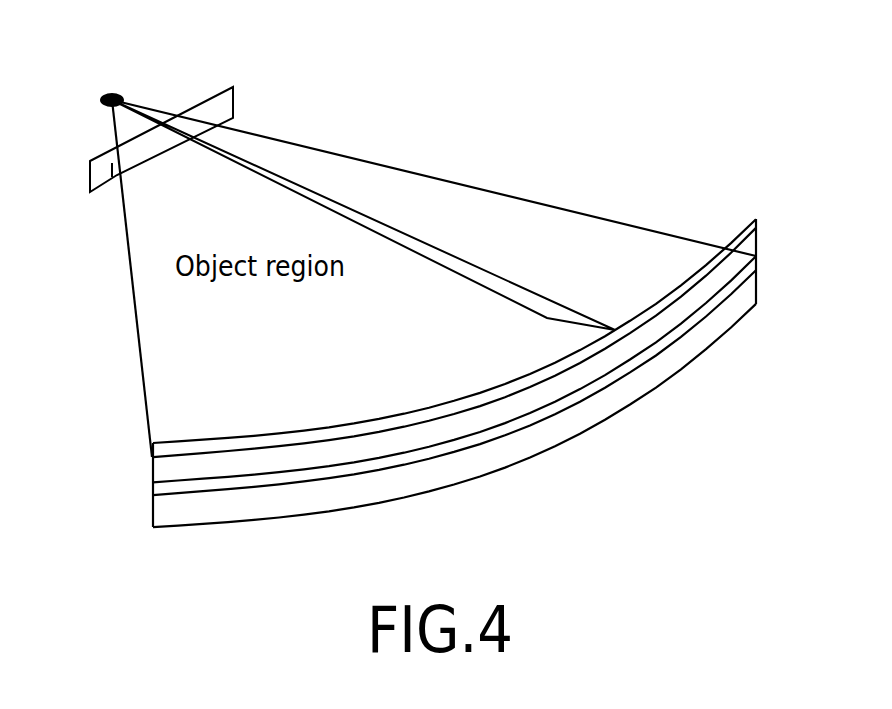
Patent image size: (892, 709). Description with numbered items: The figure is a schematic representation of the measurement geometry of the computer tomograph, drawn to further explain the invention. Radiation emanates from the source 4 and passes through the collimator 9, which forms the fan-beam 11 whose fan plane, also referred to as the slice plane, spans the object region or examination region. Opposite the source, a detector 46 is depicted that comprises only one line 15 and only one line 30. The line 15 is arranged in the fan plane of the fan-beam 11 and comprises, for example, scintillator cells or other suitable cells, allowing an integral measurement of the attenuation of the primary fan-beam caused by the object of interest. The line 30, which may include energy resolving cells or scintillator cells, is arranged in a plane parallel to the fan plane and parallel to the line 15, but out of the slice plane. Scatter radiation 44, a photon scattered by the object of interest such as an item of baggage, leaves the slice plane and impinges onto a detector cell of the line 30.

The source 4 is at (113, 93).
The collimator 9 is at (222, 88).
The fan-beam 11 is at (485, 187).
The line 30 is at (742, 232).
The scatter radiation 44 is at (553, 305).
The line 15 is at (717, 303).
The detector 46 is at (622, 388).